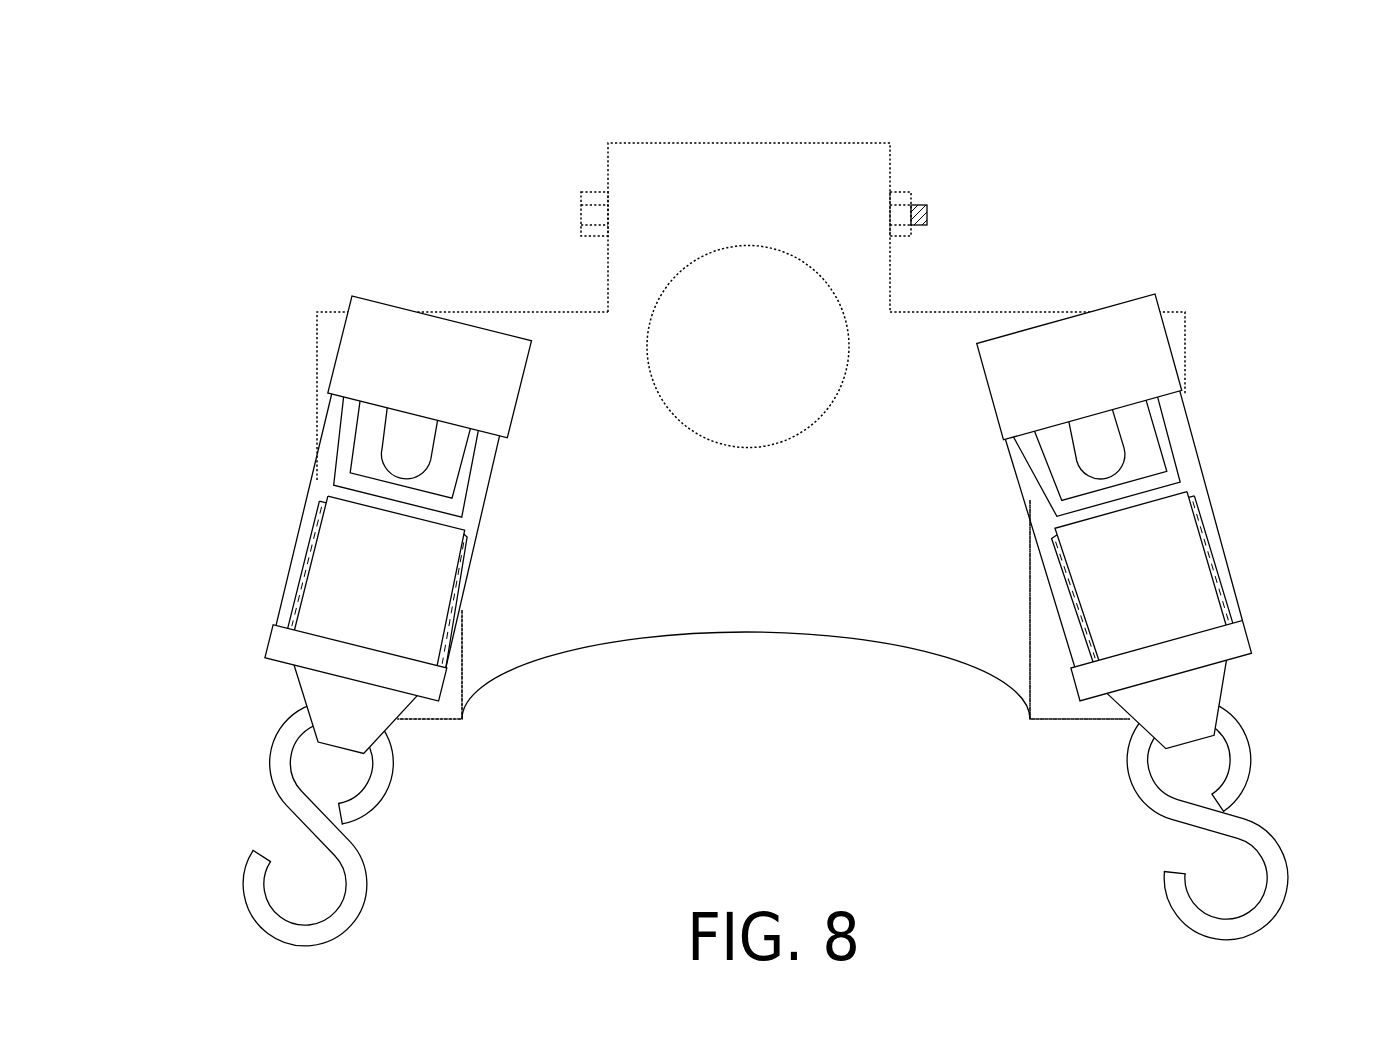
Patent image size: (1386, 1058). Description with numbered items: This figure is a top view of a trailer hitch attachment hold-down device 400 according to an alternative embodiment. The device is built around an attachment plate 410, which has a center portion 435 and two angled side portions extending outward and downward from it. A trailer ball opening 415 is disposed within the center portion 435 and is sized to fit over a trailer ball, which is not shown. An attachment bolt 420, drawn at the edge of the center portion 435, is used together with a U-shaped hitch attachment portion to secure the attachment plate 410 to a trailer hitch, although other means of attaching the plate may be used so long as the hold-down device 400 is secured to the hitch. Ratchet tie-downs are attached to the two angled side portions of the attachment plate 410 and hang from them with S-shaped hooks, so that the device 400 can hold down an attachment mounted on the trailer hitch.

The trailer hitch attachment hold-down device 400 is at (273, 170).
The attachment plate 410 is at (773, 558).
The trailer ball opening 415 is at (672, 280).
The attachment bolt 420 is at (924, 207).
The center portion 435 is at (672, 203).